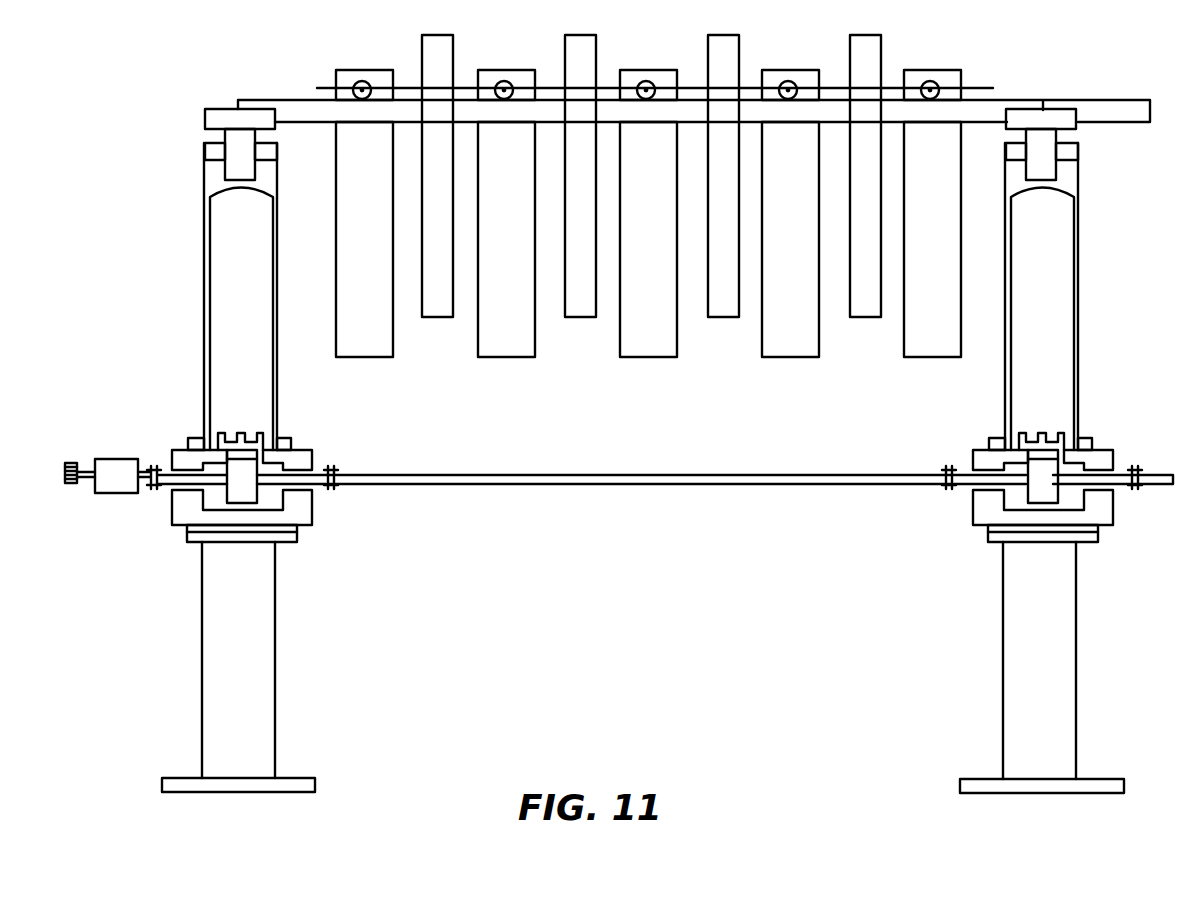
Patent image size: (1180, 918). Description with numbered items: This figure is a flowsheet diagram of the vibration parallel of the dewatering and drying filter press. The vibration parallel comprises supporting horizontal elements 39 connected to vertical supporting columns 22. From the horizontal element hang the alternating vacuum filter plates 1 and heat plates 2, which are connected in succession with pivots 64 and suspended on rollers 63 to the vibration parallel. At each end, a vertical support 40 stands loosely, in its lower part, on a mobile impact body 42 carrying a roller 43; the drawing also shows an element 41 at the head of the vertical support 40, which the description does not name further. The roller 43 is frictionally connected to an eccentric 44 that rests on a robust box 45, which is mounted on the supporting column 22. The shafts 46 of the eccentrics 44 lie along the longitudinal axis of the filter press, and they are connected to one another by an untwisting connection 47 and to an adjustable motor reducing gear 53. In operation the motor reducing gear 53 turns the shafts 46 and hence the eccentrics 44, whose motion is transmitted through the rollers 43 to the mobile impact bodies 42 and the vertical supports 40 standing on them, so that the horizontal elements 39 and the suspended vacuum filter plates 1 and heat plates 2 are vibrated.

The vacuum filter plate 1 is at (450, 70).
The heat plate 2 is at (377, 72).
The vertical supporting column 22 is at (215, 668).
The supporting horizontal element 39 is at (303, 104).
The vertical support 40 is at (240, 167).
The bearing 41 is at (212, 184).
The mobile impact body 42 is at (218, 247).
The roller 43 is at (230, 436).
The eccentric 44 is at (235, 466).
The robust box 45 is at (307, 510).
The shaft 46 is at (170, 476).
The untwisting connection 47 is at (570, 487).
The adjustable motor reducing gear 53 is at (122, 492).
The roller 63 is at (360, 80).
The pivot 64 is at (603, 87).